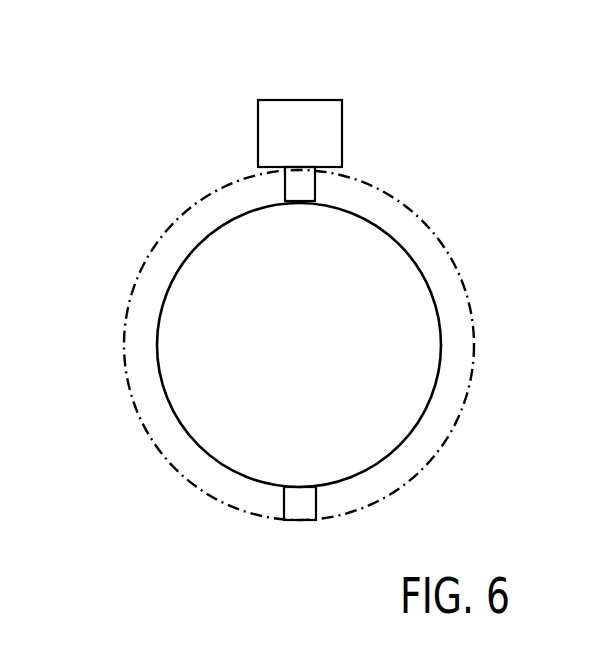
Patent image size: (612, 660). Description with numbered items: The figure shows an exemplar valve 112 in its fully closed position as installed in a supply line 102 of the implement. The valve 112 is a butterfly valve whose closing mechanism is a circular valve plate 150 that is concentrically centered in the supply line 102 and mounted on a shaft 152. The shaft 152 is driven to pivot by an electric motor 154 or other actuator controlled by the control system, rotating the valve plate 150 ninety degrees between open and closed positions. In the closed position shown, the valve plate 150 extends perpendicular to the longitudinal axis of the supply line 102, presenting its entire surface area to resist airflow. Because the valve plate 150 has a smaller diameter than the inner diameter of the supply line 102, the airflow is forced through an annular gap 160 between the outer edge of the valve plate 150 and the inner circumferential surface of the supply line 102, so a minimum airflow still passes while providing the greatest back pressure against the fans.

The supply line 102 is at (178, 211).
The valve 112 is at (487, 119).
The valve plate 150 is at (414, 319).
The shaft 152 is at (307, 178).
The electric motor 154 is at (300, 100).
The annular gap 160 is at (142, 351).